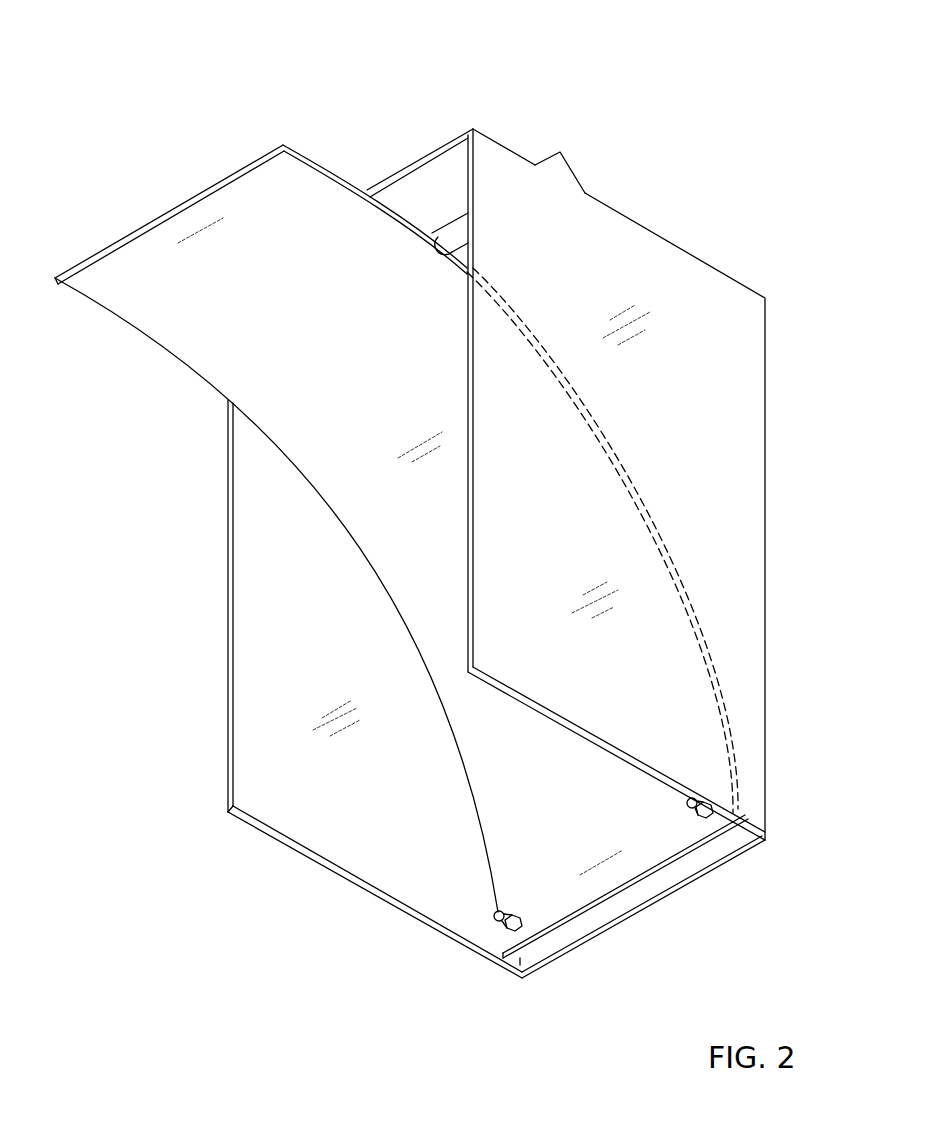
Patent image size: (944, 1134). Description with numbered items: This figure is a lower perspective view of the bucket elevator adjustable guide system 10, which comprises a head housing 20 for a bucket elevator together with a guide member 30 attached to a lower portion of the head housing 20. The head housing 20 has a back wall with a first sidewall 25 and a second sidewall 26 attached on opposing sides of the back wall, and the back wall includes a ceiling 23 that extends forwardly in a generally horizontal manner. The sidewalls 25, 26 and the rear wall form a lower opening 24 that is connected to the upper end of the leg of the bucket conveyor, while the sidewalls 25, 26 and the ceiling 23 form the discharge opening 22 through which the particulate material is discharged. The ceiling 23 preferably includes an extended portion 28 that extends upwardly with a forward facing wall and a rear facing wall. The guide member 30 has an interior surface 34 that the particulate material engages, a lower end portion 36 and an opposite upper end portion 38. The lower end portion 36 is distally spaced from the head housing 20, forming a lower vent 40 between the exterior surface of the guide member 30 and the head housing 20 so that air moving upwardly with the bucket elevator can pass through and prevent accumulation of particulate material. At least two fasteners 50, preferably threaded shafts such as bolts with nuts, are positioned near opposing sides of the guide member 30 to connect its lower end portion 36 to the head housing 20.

The bucket elevator adjustable guide system 10 is at (439, 532).
The head housing 20 is at (425, 516).
The discharge opening 22 is at (324, 689).
The ceiling 23 is at (418, 190).
The lower opening 24 is at (322, 865).
The first sidewall 25 is at (273, 632).
The second sidewall 26 is at (621, 481).
The extended portion 28 is at (563, 172).
The guide member 30 is at (313, 152).
The interior surface 34 is at (396, 477).
The lower end portion 36 is at (634, 930).
The upper end portion 38 is at (183, 200).
The lower vent 40 is at (617, 908).
The fasteners 50 is at (492, 912).